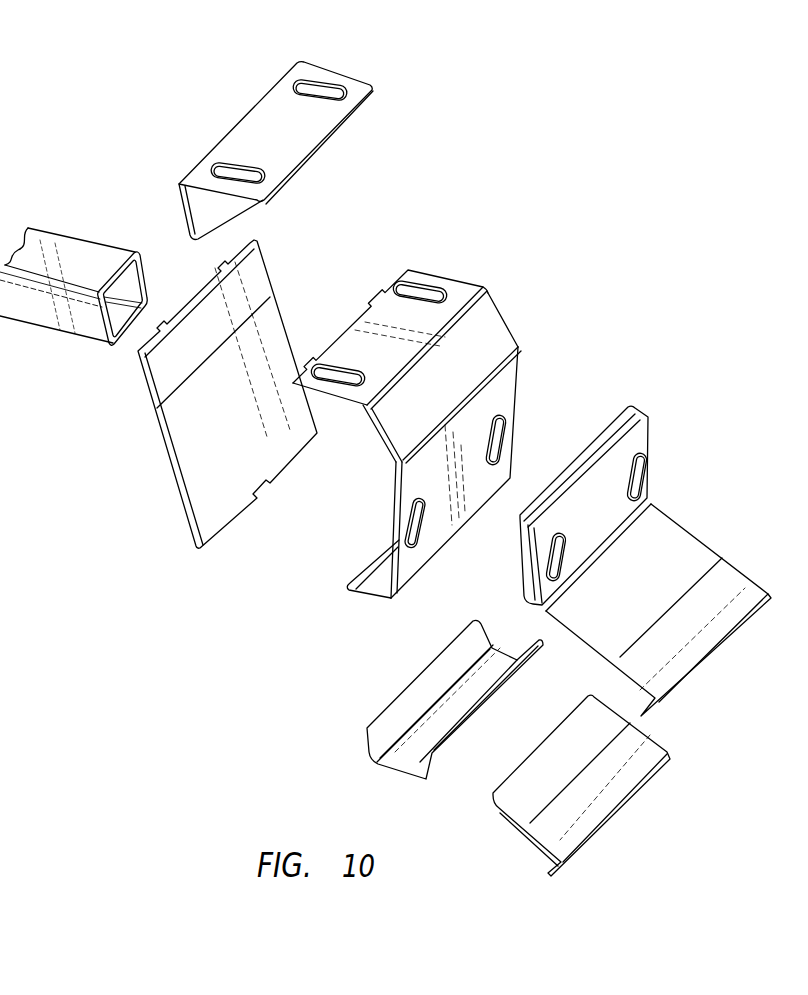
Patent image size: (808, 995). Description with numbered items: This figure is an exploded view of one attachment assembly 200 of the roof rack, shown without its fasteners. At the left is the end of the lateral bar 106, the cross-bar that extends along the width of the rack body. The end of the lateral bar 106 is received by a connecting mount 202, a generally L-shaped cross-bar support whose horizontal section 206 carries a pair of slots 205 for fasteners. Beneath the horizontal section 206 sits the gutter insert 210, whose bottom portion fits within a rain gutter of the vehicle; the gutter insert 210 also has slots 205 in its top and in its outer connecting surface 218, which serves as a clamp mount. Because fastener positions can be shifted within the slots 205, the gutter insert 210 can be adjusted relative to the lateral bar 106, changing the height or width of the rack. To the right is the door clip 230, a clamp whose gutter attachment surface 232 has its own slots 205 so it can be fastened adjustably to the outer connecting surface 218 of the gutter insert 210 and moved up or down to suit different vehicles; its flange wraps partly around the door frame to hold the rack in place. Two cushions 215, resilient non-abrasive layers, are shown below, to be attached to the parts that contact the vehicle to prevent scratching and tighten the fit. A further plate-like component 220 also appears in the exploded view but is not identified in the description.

The attachment assembly 200 is at (578, 145).
The lateral bar 106 is at (81, 247).
The connecting mount 202 is at (185, 150).
The slots 205 is at (297, 78).
The horizontal section 206 is at (262, 125).
The gutter insert 210 is at (495, 334).
The cushion 215 is at (425, 743).
The outer connecting surface 218 is at (487, 407).
The plate 220 is at (158, 394).
The door clip 230 is at (690, 552).
The gutter attachment surface 232 is at (641, 444).